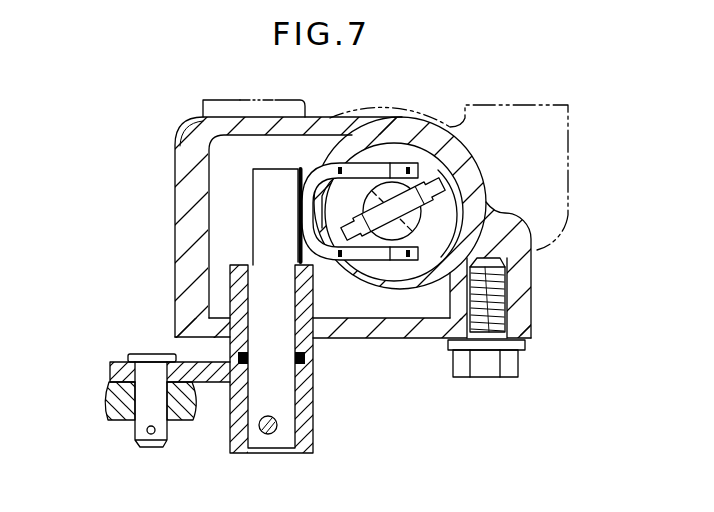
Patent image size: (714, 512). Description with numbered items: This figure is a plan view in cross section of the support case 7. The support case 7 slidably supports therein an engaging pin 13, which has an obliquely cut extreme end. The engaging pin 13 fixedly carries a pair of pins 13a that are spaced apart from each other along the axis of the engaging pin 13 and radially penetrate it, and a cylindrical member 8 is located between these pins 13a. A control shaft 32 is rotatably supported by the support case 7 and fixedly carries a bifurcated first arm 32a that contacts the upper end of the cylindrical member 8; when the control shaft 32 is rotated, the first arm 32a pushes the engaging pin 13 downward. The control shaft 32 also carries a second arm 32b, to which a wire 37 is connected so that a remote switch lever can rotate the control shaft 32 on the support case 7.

The support case 7 is at (175, 140).
The cylindrical member 8 is at (445, 207).
The engaging pin 13 is at (397, 232).
The pins 13a is at (441, 185).
The control shaft 32 is at (253, 198).
The first arm 32a is at (322, 166).
The second arm 32b is at (114, 361).
The wire 37 is at (105, 407).